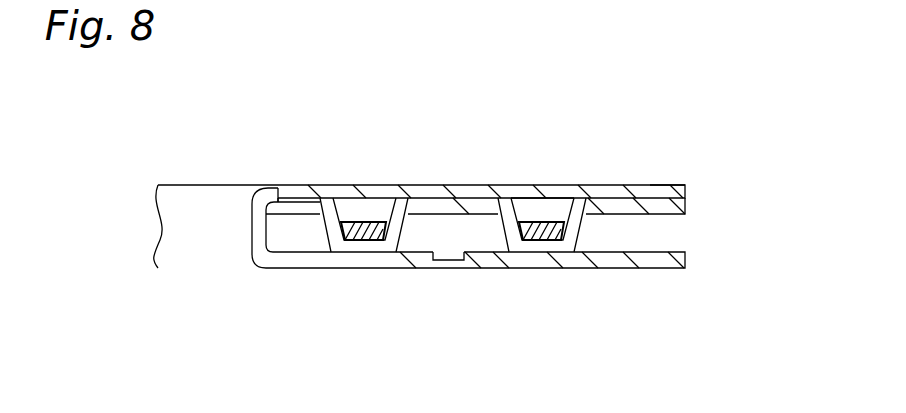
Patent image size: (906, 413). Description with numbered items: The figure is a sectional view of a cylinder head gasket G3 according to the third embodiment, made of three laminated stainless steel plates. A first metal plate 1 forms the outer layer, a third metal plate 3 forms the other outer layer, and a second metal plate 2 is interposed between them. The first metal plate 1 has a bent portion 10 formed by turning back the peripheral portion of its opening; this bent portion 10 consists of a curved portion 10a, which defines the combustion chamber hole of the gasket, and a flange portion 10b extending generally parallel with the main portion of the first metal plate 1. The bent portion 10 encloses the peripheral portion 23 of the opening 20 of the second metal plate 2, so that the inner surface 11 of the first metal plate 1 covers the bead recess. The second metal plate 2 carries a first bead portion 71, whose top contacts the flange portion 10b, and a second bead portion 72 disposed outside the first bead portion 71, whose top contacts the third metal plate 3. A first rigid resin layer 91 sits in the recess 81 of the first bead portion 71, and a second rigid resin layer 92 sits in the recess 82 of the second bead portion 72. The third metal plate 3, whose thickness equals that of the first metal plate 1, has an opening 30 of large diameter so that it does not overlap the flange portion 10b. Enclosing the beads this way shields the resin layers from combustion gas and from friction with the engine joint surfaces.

The first metal plate 1 is at (692, 194).
The second metal plate 2 is at (690, 203).
The third metal plate 3 is at (682, 257).
The bent portion 10 is at (318, 289).
The curved portion 10a is at (260, 252).
The flange portion 10b is at (390, 258).
The inner surface 11 is at (518, 209).
The opening 20 is at (283, 204).
The peripheral portion 23 is at (305, 206).
The opening 30 is at (450, 258).
The first bead portion 71 is at (362, 246).
The second bead portion 72 is at (545, 248).
The recess 81 is at (344, 210).
The recess 82 is at (563, 212).
The first rigid resin layer 91 is at (372, 216).
The second rigid resin layer 92 is at (540, 222).
The cylinder head gasket G3 is at (659, 183).